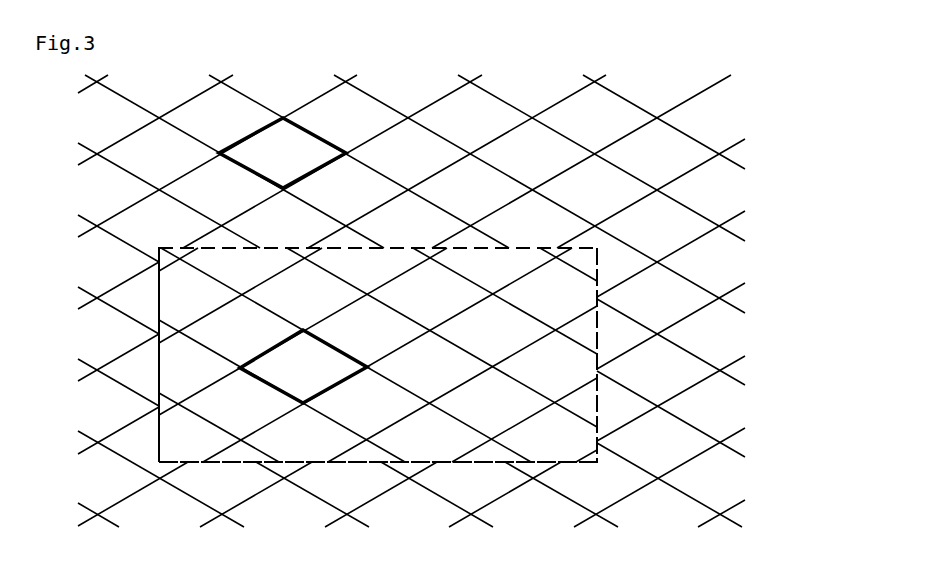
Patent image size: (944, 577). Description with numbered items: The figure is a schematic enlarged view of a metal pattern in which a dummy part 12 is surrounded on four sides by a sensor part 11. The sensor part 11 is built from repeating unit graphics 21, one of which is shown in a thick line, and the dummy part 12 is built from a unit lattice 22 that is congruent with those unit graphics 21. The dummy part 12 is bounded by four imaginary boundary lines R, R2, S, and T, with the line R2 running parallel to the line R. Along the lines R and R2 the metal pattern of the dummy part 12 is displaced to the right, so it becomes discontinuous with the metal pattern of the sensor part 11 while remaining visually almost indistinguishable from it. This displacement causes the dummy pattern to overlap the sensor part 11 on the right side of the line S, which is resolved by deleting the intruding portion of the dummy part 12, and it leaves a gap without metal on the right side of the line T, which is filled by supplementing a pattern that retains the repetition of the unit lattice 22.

The sensor part 11 is at (663, 152).
The dummy part 12 is at (541, 367).
The unit graphics 21 is at (317, 176).
The unit lattice 22 is at (303, 331).
The imaginary boundary line R is at (400, 248).
The imaginary boundary line R2 is at (313, 468).
The imaginary boundary line S is at (599, 408).
The imaginary boundary line T is at (158, 377).